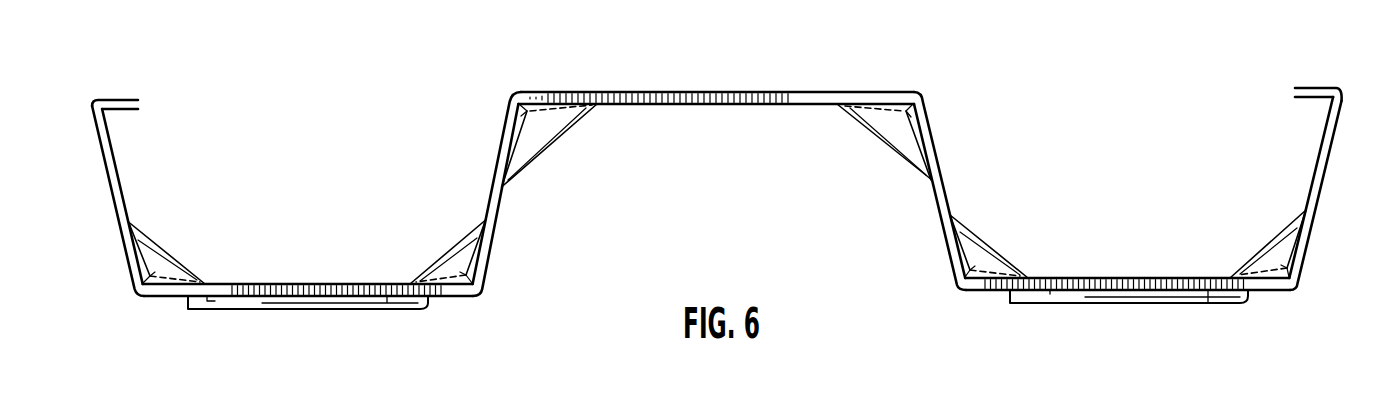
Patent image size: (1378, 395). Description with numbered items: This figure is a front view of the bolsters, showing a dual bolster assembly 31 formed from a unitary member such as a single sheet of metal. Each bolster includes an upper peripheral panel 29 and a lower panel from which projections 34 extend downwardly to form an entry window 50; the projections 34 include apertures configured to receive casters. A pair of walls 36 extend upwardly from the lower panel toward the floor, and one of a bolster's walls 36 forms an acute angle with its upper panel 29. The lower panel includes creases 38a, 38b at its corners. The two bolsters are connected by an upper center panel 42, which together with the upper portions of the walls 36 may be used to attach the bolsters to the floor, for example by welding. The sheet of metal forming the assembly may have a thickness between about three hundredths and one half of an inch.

The upper peripheral panel 29 is at (1310, 88).
The dual bolster assembly 31 is at (1043, 90).
The projections 34 is at (1150, 301).
The walls 36 is at (120, 188).
The crease 38a is at (547, 137).
The crease 38b is at (455, 263).
The upper center panel 42 is at (747, 88).
The entry window 50 is at (1120, 224).